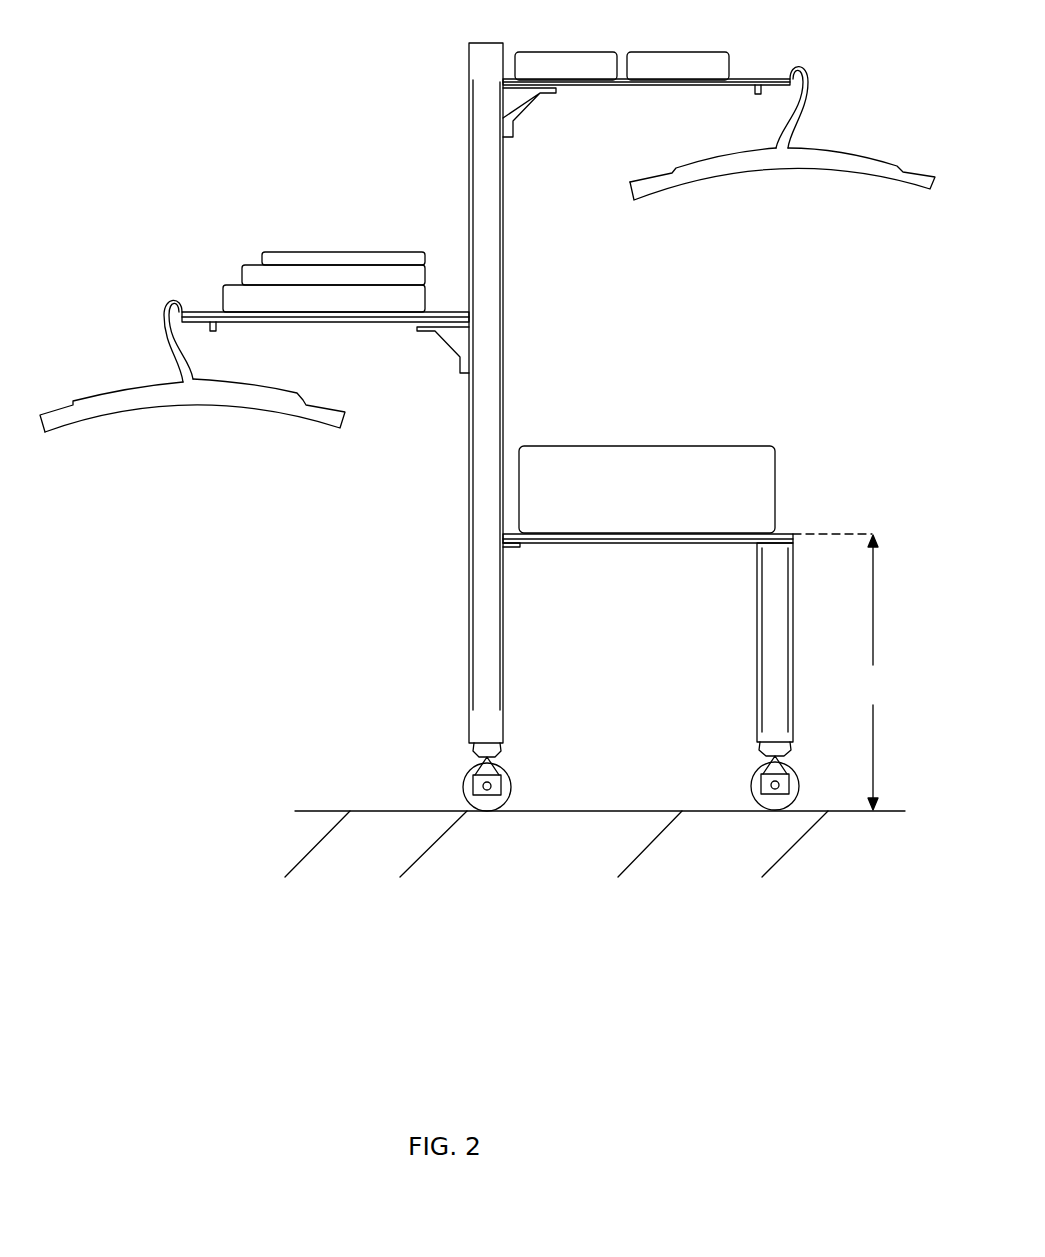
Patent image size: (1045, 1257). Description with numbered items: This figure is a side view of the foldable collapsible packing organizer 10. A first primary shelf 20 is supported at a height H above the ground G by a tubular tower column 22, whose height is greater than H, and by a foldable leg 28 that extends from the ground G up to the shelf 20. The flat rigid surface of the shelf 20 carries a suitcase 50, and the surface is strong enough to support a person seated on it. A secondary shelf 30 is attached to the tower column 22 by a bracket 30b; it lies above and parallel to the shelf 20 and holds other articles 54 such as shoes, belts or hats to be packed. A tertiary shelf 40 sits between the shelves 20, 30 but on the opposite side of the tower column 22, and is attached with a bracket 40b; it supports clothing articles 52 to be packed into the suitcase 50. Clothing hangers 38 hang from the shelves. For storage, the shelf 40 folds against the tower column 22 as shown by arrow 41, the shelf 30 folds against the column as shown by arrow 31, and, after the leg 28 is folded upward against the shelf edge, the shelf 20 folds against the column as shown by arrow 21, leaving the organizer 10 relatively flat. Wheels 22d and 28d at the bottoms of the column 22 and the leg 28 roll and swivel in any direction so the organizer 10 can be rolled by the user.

The foldable collapsible packing organizer 10 is at (832, 292).
The first primary shelf 20 is at (597, 544).
The arrow 21 is at (700, 545).
The tower column 22 is at (469, 722).
The wheel 22d is at (512, 790).
The foldable leg 28 is at (757, 702).
The wheel 28d is at (750, 788).
The secondary shelf 30 is at (590, 87).
The bracket 30b is at (517, 133).
The arrow 31 is at (663, 88).
The clothing hanger 38 is at (868, 162).
The tertiary shelf 40 is at (285, 322).
The bracket 40b is at (458, 362).
The arrow 41 is at (333, 322).
The suitcase 50 is at (775, 446).
The clothing articles 52 is at (262, 253).
The other articles 54 is at (578, 52).
The height H is at (838, 672).
The ground G is at (892, 812).